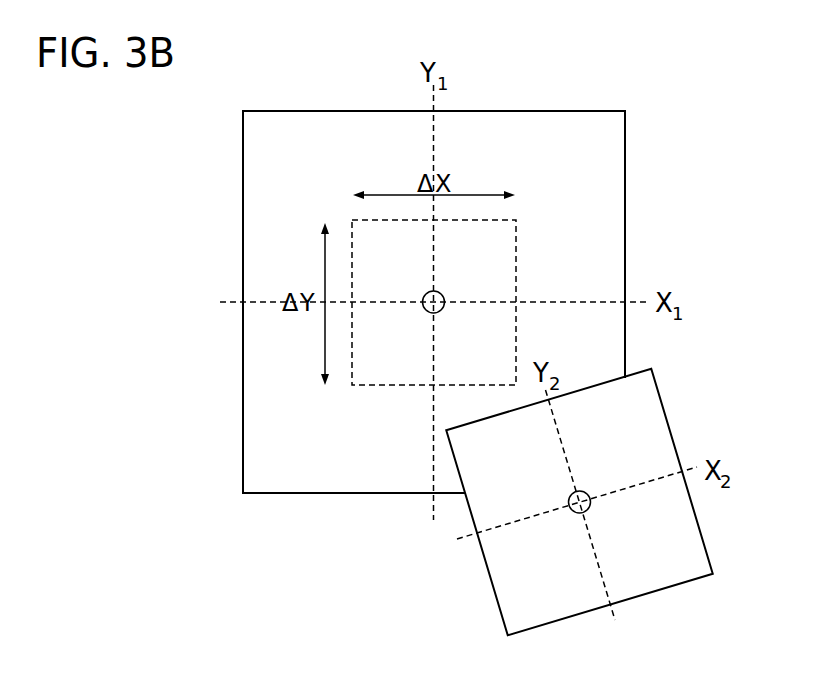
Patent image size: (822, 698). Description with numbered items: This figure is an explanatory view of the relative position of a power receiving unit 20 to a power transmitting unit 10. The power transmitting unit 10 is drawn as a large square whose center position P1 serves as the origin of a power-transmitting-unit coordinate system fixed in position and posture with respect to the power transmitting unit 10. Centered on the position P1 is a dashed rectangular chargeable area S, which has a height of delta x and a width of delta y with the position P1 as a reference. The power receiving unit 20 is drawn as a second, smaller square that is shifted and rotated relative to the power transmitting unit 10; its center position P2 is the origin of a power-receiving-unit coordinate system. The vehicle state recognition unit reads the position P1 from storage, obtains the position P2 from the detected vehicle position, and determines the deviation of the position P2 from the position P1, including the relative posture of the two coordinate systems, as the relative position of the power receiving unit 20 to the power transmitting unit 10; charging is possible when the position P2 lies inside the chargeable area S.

The power transmitting unit 10 is at (638, 145).
The power receiving unit 20 is at (674, 400).
The chargeable area S is at (530, 248).
The position of the power transmitting unit P1 is at (457, 288).
The position of the power receiving unit P2 is at (608, 506).